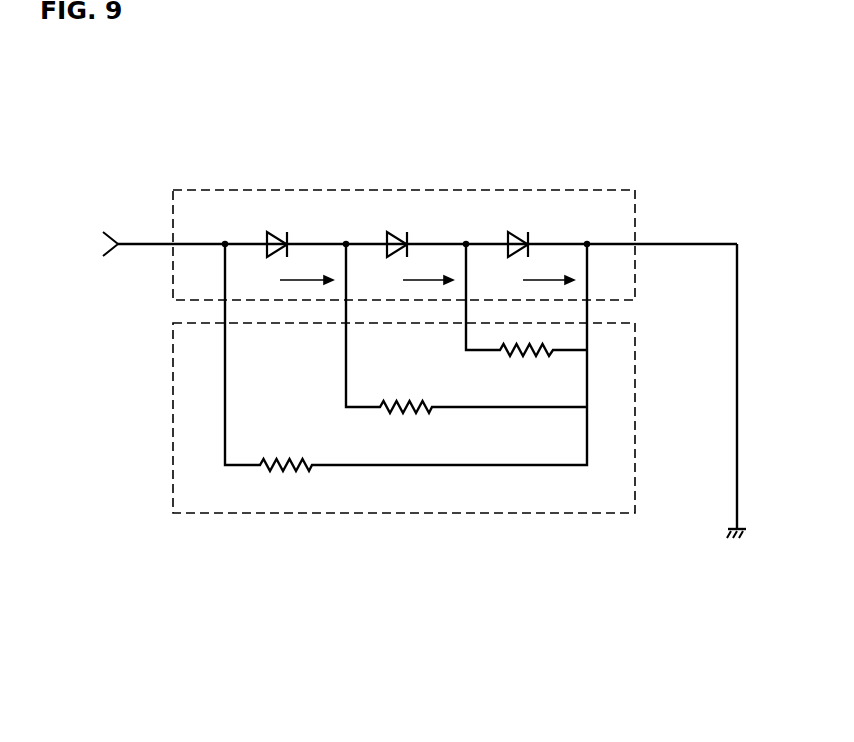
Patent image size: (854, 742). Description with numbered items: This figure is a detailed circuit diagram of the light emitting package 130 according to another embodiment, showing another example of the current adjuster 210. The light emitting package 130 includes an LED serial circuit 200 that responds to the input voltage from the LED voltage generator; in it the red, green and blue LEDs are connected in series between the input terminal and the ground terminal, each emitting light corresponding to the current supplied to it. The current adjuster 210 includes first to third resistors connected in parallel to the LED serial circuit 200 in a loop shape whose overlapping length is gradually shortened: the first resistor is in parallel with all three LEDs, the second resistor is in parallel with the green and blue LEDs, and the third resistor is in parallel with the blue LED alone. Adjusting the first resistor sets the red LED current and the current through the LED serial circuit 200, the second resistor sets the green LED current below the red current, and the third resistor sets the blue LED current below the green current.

The light emitting package 130 is at (97, 102).
The LED serial circuit 200 is at (636, 212).
The current adjuster 210 is at (636, 410).